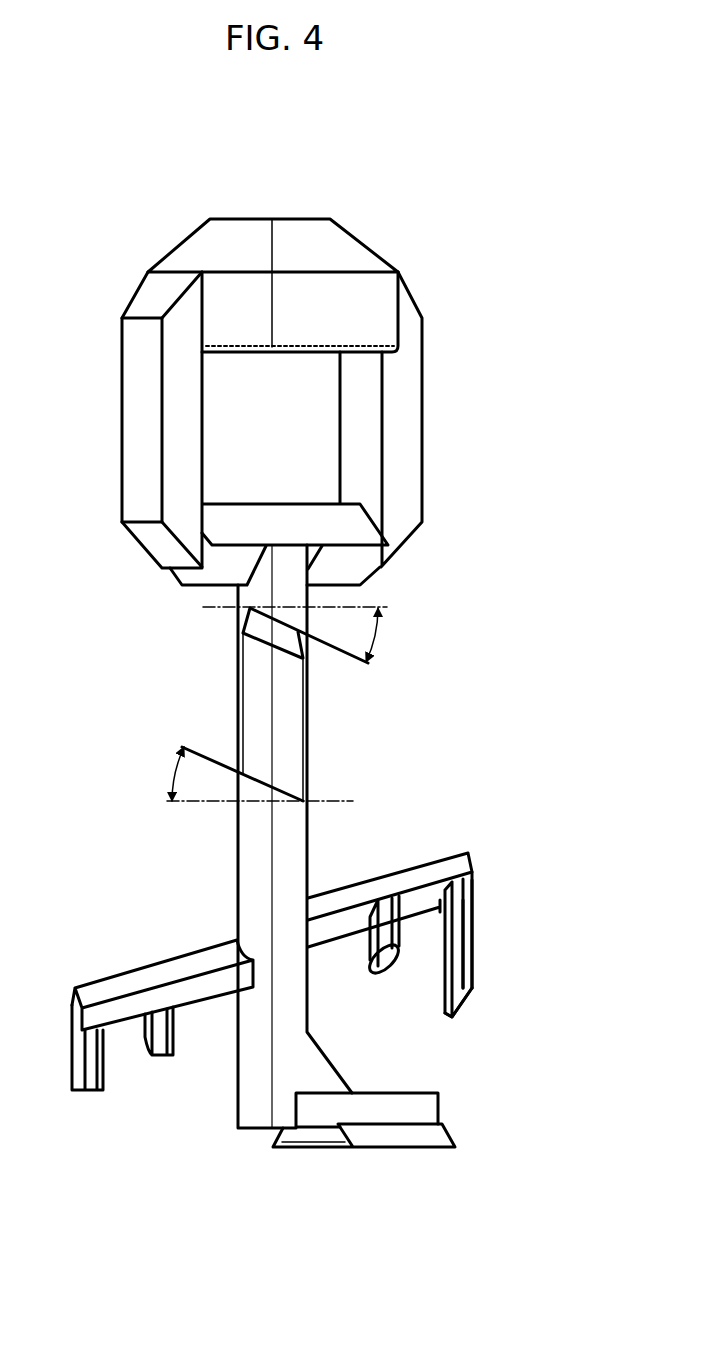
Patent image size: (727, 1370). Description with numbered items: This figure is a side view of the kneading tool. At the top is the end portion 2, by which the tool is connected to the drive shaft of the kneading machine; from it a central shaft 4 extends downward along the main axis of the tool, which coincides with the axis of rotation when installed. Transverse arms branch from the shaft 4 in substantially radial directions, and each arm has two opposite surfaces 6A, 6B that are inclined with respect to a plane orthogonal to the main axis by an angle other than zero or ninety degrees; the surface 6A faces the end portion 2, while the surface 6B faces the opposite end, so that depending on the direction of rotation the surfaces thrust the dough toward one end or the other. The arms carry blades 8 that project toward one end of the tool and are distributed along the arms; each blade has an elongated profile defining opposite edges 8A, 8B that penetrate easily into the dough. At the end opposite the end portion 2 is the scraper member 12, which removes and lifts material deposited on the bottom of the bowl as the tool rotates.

The end portion 2 is at (146, 271).
The central shaft 4 is at (296, 857).
The surface of arm facing end portion 6A is at (280, 617).
The surface of arm facing opposite end 6B is at (255, 782).
The blades 8 is at (88, 1092).
The edge of blade 8A is at (457, 1018).
The edge of blade 8B is at (465, 987).
The scraper member 12 is at (454, 1127).